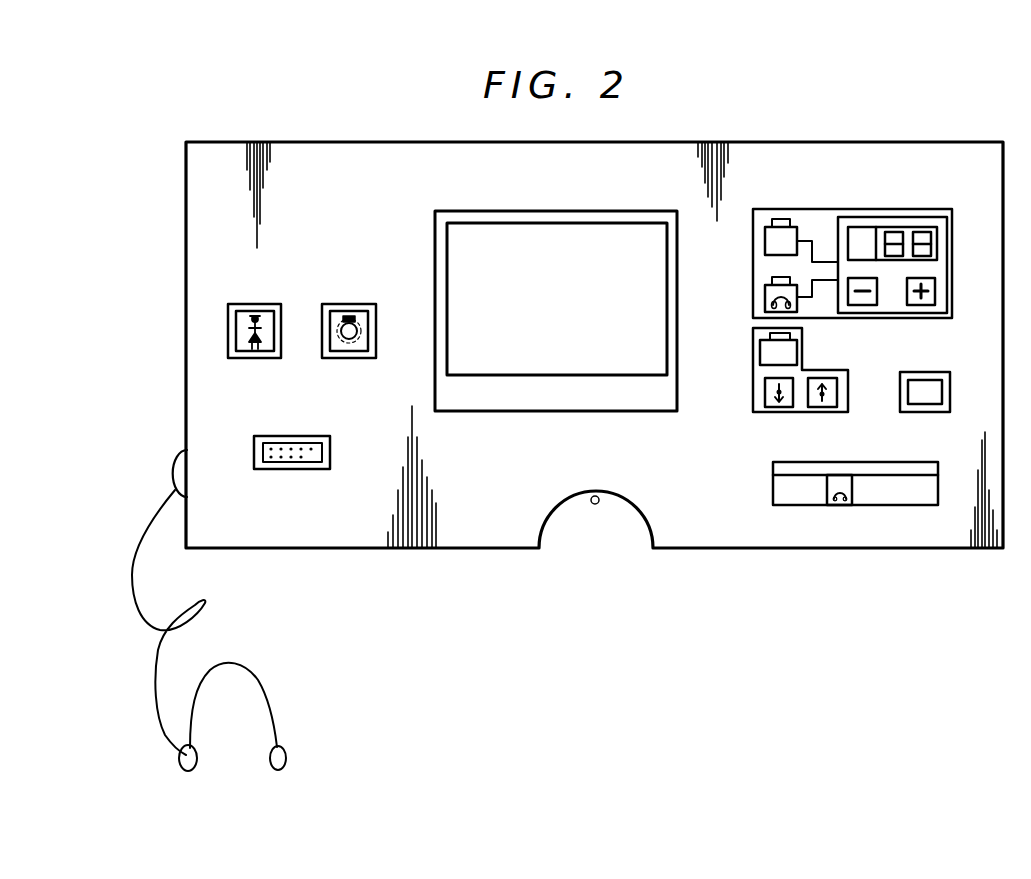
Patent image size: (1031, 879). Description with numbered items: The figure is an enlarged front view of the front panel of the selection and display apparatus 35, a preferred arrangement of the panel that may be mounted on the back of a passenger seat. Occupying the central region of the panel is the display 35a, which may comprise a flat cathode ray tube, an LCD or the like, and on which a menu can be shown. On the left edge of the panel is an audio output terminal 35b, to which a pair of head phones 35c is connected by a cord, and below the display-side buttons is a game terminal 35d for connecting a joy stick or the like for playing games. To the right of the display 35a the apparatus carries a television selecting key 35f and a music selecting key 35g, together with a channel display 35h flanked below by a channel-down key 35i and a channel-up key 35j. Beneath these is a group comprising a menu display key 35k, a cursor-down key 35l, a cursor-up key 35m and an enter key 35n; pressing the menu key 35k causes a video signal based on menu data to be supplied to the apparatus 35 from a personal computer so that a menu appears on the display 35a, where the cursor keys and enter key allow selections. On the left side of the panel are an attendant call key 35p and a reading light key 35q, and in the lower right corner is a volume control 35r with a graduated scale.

The selection and display apparatus 35 is at (505, 548).
The display 35a is at (514, 368).
The audio output terminal 35b is at (185, 470).
The head phones 35c is at (287, 752).
The game terminal 35d is at (307, 462).
The television selecting key 35f is at (765, 246).
The music selecting key 35g is at (765, 296).
The channel display 35h is at (932, 240).
The channel-down key 35i is at (858, 305).
The channel-up key 35j is at (920, 305).
The menu display key 35k is at (760, 345).
The cursor-down key 35l is at (765, 394).
The cursor-up key 35m is at (822, 407).
The enter key 35n is at (930, 412).
The attendant call key 35p is at (265, 348).
The reading light key 35q is at (358, 348).
The volume control 35r is at (880, 495).